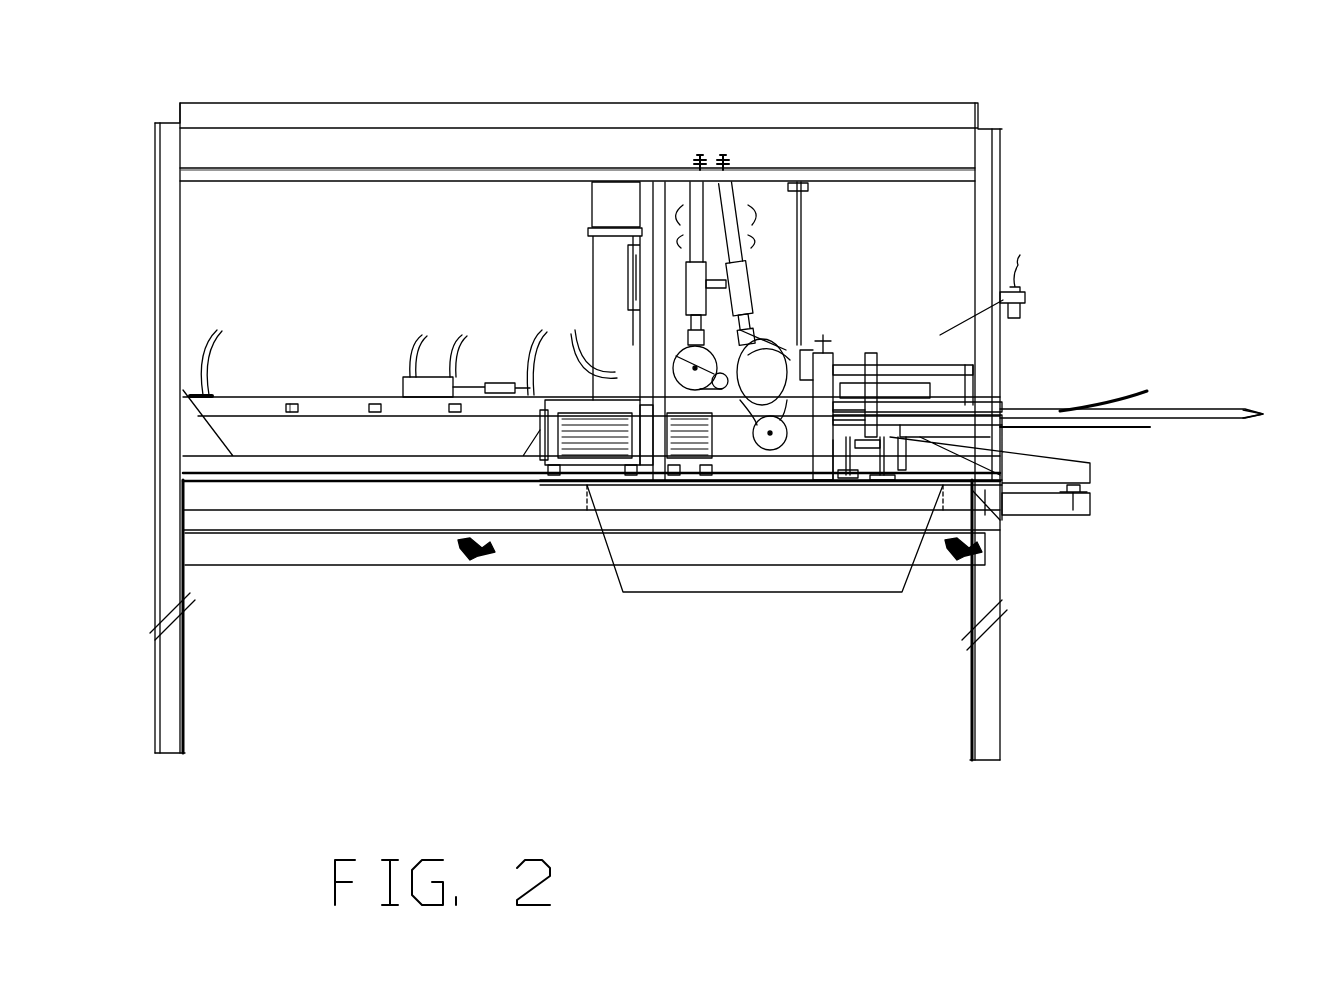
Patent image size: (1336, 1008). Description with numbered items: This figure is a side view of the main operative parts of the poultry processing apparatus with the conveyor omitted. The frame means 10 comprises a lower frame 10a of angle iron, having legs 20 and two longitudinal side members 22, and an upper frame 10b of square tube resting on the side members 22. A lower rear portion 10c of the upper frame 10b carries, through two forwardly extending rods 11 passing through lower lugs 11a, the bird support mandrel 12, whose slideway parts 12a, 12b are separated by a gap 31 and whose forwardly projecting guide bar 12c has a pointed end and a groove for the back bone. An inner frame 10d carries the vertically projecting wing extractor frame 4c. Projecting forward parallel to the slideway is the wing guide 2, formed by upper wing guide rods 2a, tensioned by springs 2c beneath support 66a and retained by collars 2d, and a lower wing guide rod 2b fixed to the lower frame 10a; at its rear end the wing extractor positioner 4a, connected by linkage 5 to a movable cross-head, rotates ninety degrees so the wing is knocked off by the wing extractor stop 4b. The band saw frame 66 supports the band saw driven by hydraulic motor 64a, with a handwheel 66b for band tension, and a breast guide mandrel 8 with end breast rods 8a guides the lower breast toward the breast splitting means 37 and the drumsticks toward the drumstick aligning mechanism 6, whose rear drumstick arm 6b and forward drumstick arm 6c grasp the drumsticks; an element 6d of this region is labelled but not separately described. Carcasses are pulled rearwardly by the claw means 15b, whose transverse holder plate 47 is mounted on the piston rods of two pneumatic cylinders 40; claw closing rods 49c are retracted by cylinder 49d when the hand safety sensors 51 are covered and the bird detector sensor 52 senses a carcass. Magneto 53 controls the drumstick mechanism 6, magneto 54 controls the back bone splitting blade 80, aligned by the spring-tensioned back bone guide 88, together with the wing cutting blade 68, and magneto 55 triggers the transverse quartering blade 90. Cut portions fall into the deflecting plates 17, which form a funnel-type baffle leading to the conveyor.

The wing guide 2 is at (1160, 392).
The upper wing guide rods 2a is at (1144, 390).
The lower wing guide rod 2b is at (1150, 429).
The springs 2c is at (975, 387).
The collars 2d is at (978, 365).
The wing extractor positioner 4a is at (809, 330).
The wing extractor stop 4b is at (786, 330).
The wing extractor frame 4c is at (797, 221).
The linkage 5 is at (760, 333).
The drumstick aligning mechanism 6 is at (880, 490).
The rear drumstick arm 6b is at (847, 490).
The forward drumstick arm 6c is at (907, 484).
The drive shaft coupling 6d is at (840, 486).
The breast guide mandrel 8 is at (1083, 480).
The end breast rods 8a is at (882, 490).
The frame means 10 is at (1010, 208).
The lower frame 10a is at (318, 550).
The upper frame 10b is at (808, 115).
The lower rear portion of the upper frame 10c is at (262, 458).
The inner frame 10d is at (210, 172).
The forwardly extending rods 11 is at (575, 484).
The lower lugs 11a is at (533, 474).
The bird support mandrel 12 is at (532, 385).
The slideway part 12a is at (578, 350).
The slideway part 12b is at (682, 484).
The guide bar 12c is at (1245, 411).
The claw means 15b is at (1010, 401).
The deflecting plates 17 is at (728, 576).
The legs 20 is at (170, 690).
The longitudinal side members 22 is at (1000, 512).
The gap 31 is at (622, 484).
The breast splitting means 37 is at (750, 482).
The pneumatic cylinders 40 is at (243, 400).
The transverse holder plate 47 is at (913, 350).
The claw closing rods 49c is at (922, 330).
The cylinder 49d is at (418, 390).
The hand safety sensors 51 is at (1078, 497).
The bird detector sensor 52 is at (1027, 297).
The magneto 53 is at (455, 414).
The magneto 54 is at (375, 414).
The magneto 55 is at (292, 414).
The hydraulic motor 64a is at (868, 332).
The band saw frame 66 is at (855, 330).
The support 66a is at (935, 368).
The handwheel 66b is at (828, 330).
The wing cutting blade 68 is at (716, 484).
The back bone splitting blade 80 is at (672, 340).
The back bone guide 88 is at (690, 348).
The transverse quartering blade 90 is at (640, 345).